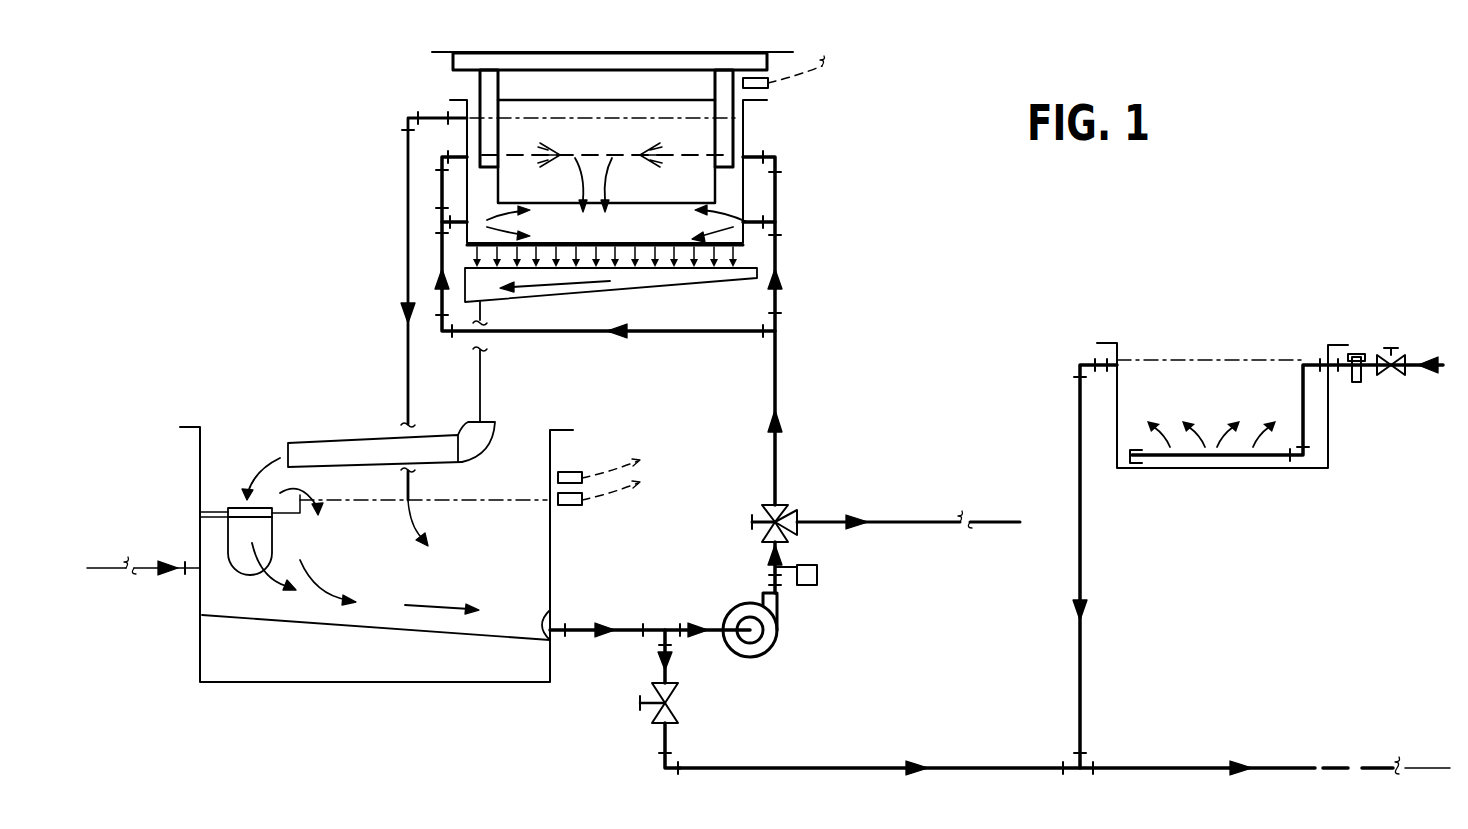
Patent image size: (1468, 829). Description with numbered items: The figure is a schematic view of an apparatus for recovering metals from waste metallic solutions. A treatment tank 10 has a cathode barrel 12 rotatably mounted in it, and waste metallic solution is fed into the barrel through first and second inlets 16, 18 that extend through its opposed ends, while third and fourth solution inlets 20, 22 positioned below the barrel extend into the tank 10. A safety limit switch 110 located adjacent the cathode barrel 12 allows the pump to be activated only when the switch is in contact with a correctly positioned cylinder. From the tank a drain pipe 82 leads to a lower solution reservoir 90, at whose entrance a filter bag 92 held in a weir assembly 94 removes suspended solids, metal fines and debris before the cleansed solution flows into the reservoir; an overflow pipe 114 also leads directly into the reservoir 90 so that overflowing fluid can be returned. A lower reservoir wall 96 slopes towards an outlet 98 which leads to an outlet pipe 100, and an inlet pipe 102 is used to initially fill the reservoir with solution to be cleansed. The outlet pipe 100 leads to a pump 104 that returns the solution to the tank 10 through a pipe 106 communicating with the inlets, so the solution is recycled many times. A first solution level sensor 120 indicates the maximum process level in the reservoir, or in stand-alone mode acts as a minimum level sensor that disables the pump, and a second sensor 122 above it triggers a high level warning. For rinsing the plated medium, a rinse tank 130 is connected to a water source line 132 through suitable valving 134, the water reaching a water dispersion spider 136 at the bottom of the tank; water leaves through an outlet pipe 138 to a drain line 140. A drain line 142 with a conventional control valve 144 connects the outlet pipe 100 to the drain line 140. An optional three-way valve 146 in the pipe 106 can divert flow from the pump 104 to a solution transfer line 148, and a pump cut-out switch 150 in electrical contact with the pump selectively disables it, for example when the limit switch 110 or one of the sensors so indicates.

The treatment tank 10 is at (756, 119).
The cathode barrel 12 is at (745, 180).
The first inlet 16 is at (718, 157).
The second inlet 18 is at (482, 155).
The third solution inlet 20 is at (748, 222).
The fourth solution inlet 22 is at (467, 218).
The safety limit switch 110 is at (760, 78).
The overflow pipe 114 is at (408, 258).
The drain pipe 82 is at (363, 445).
The lower solution reservoir 90 is at (192, 606).
The filter bag 92 is at (237, 522).
The weir assembly 94 is at (282, 524).
The lower reservoir wall 96 is at (392, 616).
The outlet 98 is at (552, 603).
The outlet pipe 100 is at (572, 633).
The inlet pipe 102 is at (157, 568).
The pump 104 is at (778, 620).
The pipe 106 is at (779, 378).
The first solution level sensor 120 is at (572, 505).
The second sensor 122 is at (570, 475).
The rinse tank 130 is at (1330, 453).
The water source line 132 is at (1425, 370).
The valving 134 is at (1378, 358).
The water dispersion spider 136 is at (1215, 458).
The outlet pipe 138 is at (1082, 710).
The drain line 140 is at (1168, 768).
The drain line 142 is at (672, 741).
The control valve 144 is at (673, 700).
The three-way valve 146 is at (783, 512).
The solution transfer line 148 is at (912, 520).
The pump cut-out switch 150 is at (818, 573).